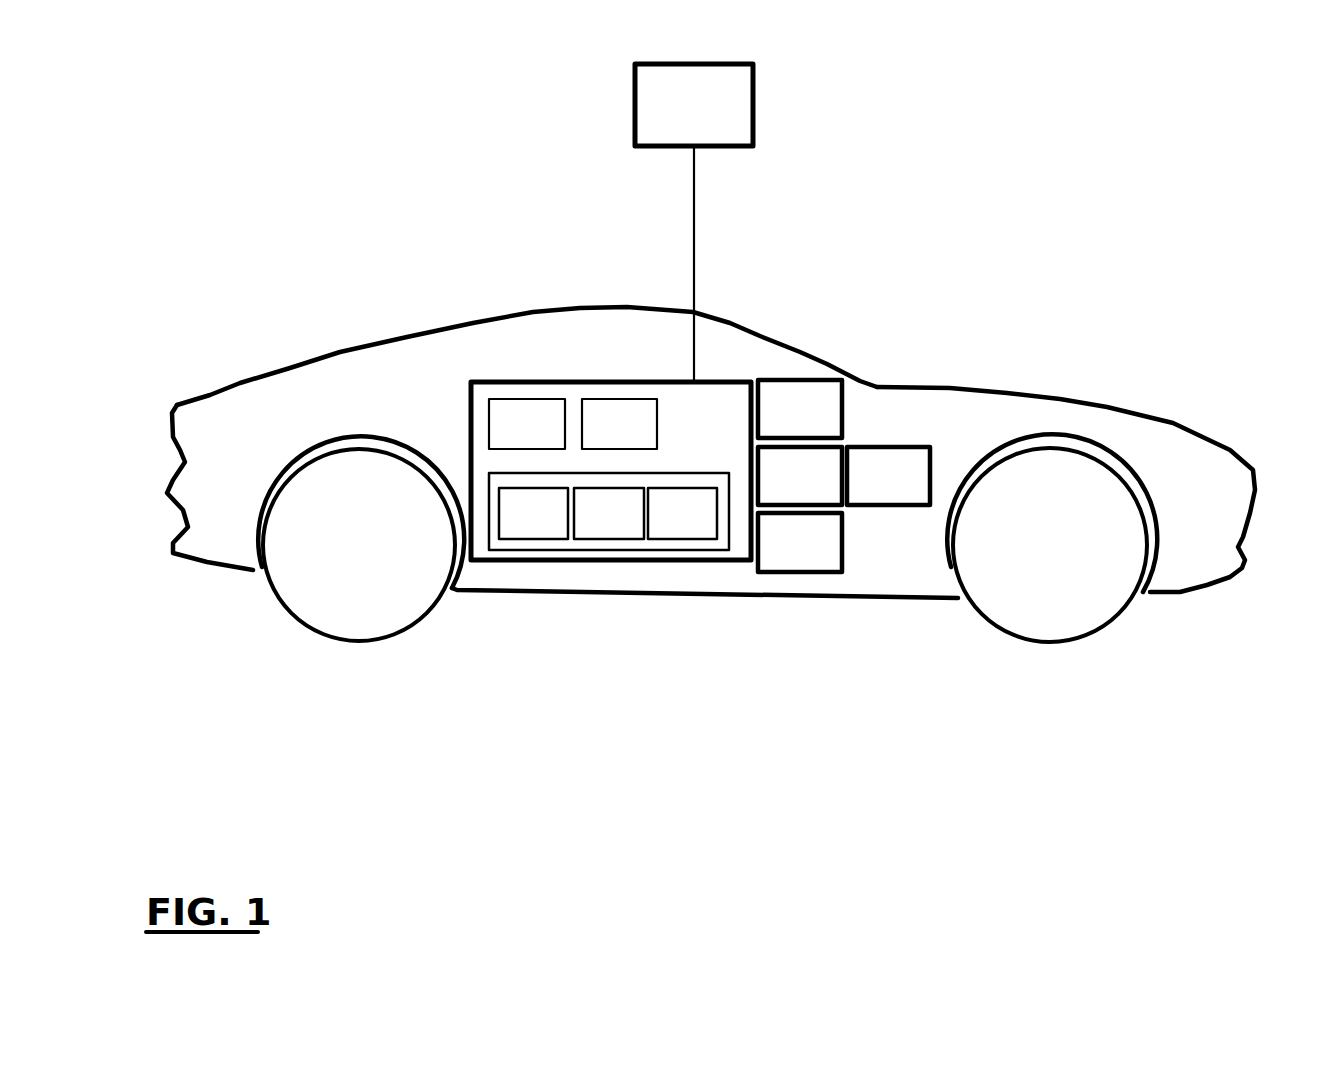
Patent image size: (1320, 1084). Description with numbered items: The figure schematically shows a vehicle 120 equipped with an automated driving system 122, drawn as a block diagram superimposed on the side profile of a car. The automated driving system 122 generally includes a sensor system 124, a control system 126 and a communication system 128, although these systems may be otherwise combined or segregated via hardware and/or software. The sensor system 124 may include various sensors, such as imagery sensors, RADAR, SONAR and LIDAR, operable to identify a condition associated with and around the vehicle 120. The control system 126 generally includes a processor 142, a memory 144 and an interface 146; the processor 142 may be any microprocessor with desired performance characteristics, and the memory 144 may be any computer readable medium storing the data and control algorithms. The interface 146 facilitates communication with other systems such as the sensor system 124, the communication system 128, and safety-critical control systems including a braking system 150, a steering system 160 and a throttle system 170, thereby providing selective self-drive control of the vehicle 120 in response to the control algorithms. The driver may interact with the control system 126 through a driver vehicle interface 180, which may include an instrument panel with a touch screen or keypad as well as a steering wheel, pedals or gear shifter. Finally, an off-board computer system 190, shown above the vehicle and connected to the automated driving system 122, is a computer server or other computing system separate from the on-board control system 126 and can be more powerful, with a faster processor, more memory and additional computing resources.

The vehicle 120 is at (212, 392).
The automated driving system 122 is at (637, 562).
The sensor system 124 is at (510, 398).
The control system 126 is at (498, 550).
The communication system 128 is at (603, 398).
The processor 142 is at (550, 529).
The memory 144 is at (626, 529).
The interface 146 is at (700, 529).
The braking system 150 is at (817, 423).
The steering system 160 is at (817, 491).
The throttle system 170 is at (817, 558).
The driver vehicle interface 180 is at (905, 491).
The off-board computer system 190 is at (711, 118).